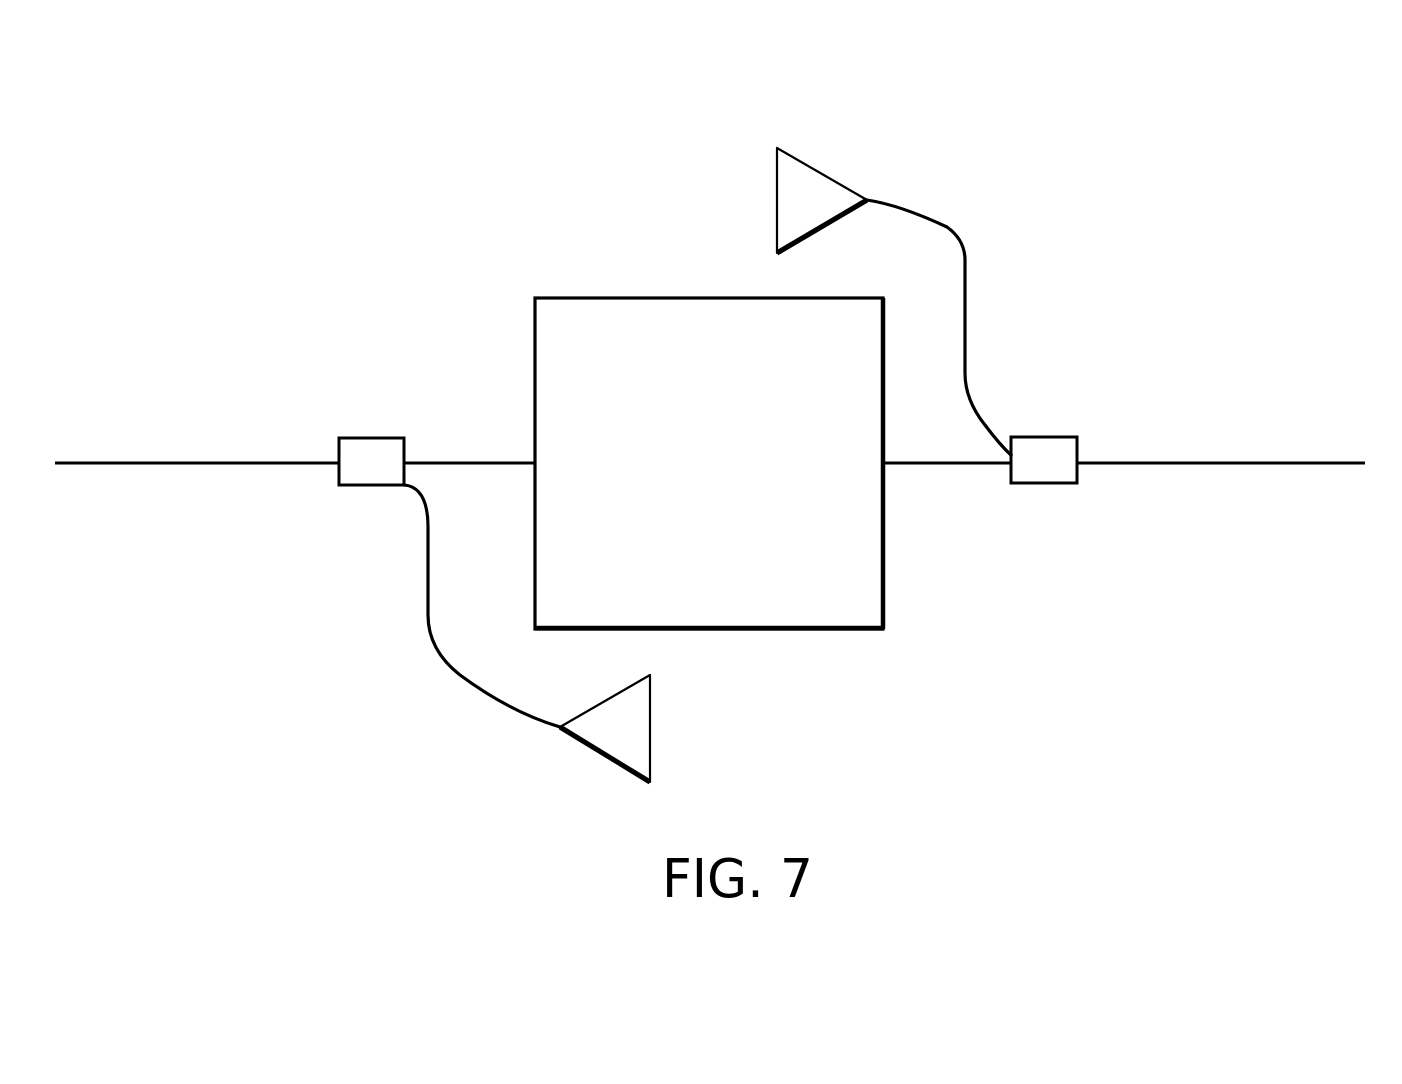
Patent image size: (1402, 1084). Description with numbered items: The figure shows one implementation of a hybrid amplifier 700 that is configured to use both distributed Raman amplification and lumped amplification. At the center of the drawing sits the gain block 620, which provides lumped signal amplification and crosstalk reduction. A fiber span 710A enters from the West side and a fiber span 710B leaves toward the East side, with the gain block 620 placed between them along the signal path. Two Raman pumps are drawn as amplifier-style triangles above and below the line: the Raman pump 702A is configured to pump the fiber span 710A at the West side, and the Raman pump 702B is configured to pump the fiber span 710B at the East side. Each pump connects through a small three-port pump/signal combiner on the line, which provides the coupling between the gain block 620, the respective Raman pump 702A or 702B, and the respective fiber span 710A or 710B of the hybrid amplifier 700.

The hybrid amplifier 700 is at (237, 647).
The gain block 620 is at (635, 298).
The Raman pump 702A is at (602, 753).
The Raman pump 702B is at (828, 175).
The fiber span 710A is at (137, 463).
The fiber span 710B is at (1217, 462).